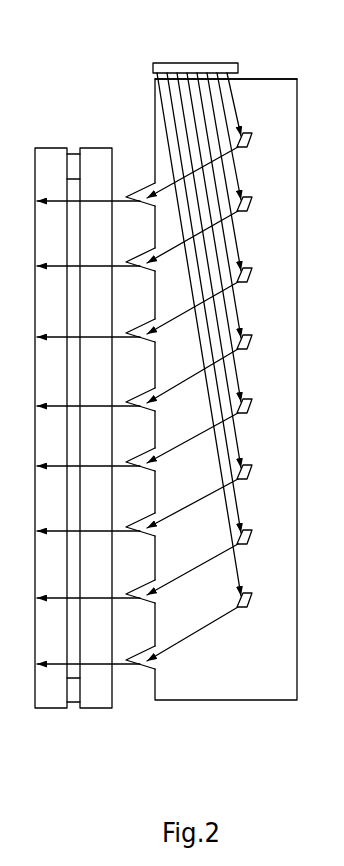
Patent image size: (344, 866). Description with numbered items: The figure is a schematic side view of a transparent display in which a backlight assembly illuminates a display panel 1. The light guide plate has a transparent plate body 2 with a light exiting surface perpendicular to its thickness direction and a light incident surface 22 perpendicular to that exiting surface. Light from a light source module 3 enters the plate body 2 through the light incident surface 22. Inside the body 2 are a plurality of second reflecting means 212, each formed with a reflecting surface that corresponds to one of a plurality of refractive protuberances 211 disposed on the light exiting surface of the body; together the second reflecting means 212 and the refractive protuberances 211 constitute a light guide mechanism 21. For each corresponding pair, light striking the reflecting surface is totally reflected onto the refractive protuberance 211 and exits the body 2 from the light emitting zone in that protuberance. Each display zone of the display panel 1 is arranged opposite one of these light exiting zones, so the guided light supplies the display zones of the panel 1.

The display panel 1 is at (47, 163).
The transparent plate body 2 is at (216, 408).
The light guide mechanism 21 is at (187, 456).
The refractive protuberance 211 is at (150, 669).
The second reflecting means 212 is at (242, 608).
The light incident surface 22 is at (257, 79).
The light source module 3 is at (218, 63).